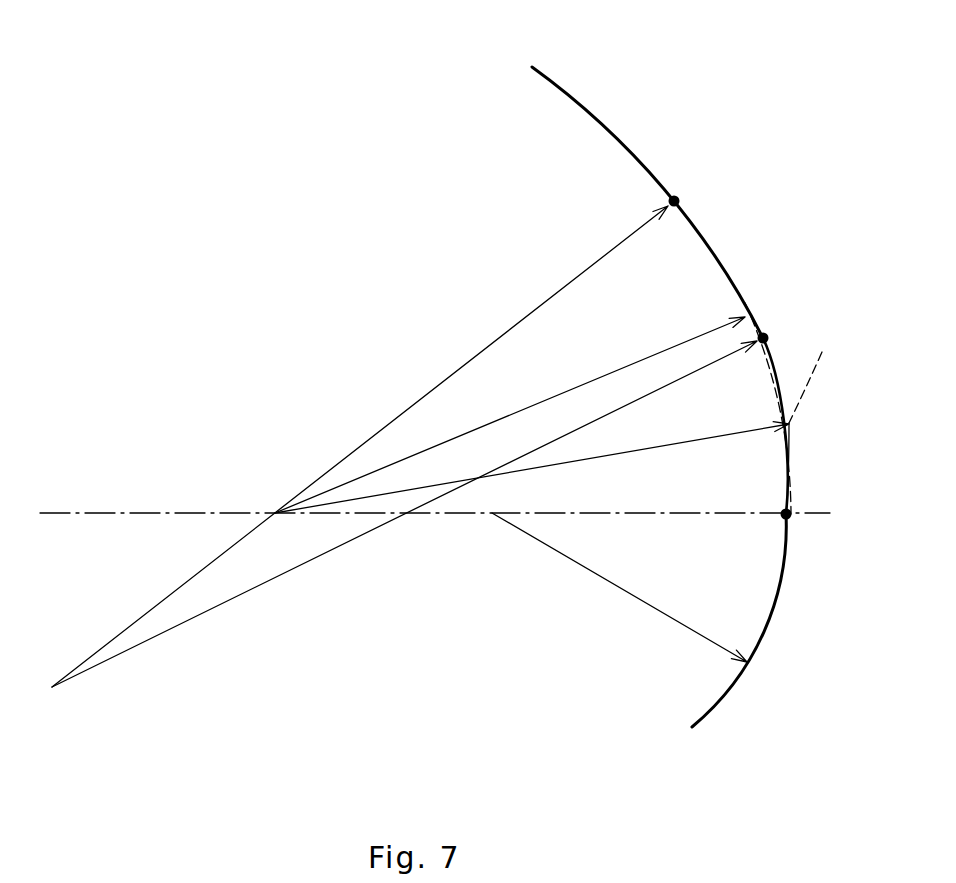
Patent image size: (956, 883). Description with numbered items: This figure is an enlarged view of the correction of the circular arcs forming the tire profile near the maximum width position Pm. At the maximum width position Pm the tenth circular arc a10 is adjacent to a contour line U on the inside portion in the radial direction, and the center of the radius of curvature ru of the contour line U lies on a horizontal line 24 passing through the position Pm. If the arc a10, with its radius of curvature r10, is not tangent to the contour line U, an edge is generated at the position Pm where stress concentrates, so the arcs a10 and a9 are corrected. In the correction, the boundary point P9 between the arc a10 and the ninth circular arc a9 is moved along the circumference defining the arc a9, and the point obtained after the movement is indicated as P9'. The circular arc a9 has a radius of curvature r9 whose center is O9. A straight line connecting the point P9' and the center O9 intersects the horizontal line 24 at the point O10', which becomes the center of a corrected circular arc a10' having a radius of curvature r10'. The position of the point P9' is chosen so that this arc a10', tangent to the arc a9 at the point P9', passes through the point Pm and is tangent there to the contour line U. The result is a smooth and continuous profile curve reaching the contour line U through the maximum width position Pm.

The horizontal line 24 is at (121, 512).
The ninth circular arc a9 is at (585, 107).
The tenth circular arc a10 is at (820, 357).
The corrected circular arc a10' is at (831, 468).
The contour line U is at (770, 615).
The maximum width position Pm is at (789, 519).
The boundary point P9 is at (786, 296).
The moved boundary point P9' is at (694, 144).
The center of radius of curvature r9 O9 is at (55, 690).
The center of corrected circular arc O10' is at (265, 461).
The radius of curvature of ninth circular arc r9 is at (404, 446).
The radius of curvature of corrected circular arc r10' is at (510, 415).
The radius of curvature of tenth circular arc r10 is at (532, 465).
The radius of curvature of contour line ru is at (619, 587).